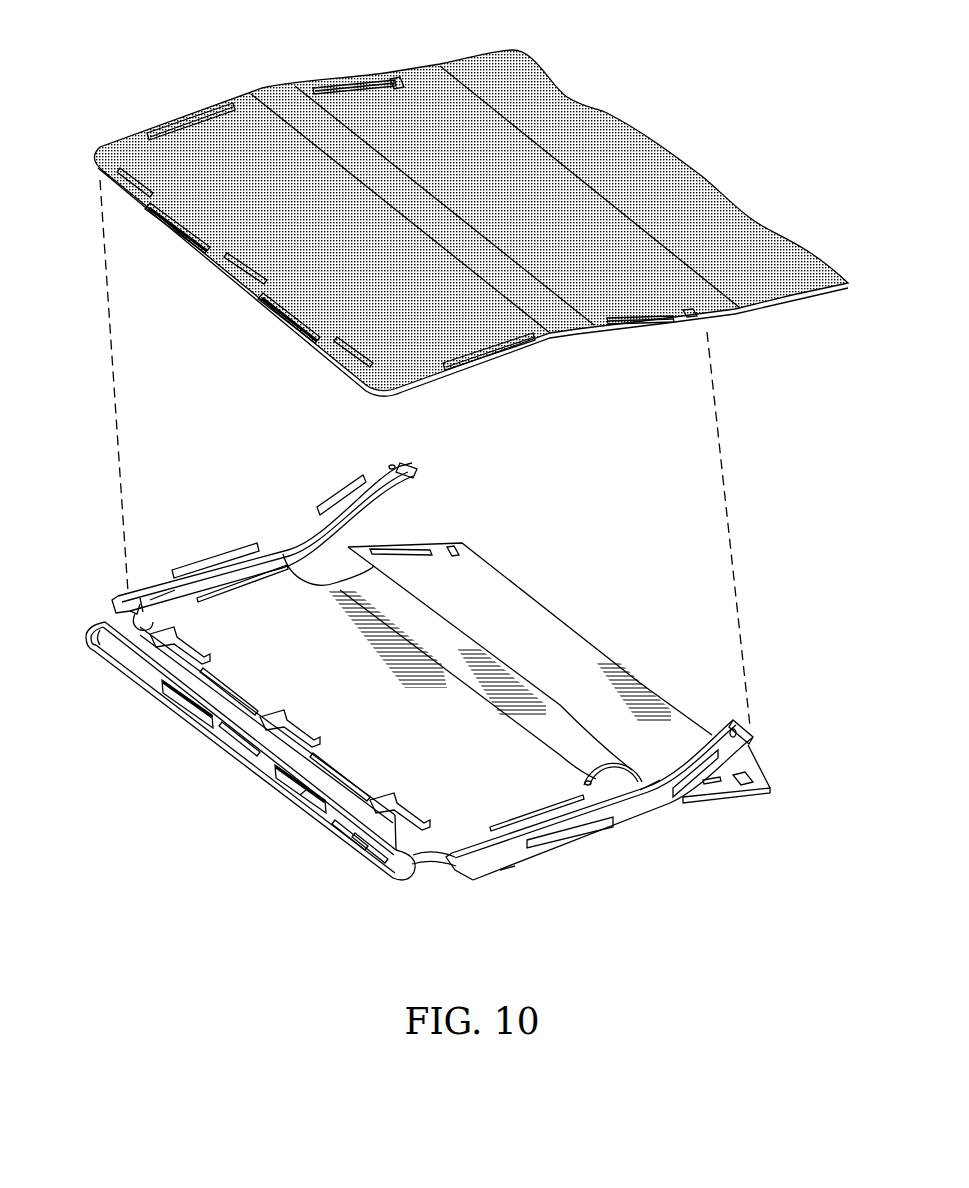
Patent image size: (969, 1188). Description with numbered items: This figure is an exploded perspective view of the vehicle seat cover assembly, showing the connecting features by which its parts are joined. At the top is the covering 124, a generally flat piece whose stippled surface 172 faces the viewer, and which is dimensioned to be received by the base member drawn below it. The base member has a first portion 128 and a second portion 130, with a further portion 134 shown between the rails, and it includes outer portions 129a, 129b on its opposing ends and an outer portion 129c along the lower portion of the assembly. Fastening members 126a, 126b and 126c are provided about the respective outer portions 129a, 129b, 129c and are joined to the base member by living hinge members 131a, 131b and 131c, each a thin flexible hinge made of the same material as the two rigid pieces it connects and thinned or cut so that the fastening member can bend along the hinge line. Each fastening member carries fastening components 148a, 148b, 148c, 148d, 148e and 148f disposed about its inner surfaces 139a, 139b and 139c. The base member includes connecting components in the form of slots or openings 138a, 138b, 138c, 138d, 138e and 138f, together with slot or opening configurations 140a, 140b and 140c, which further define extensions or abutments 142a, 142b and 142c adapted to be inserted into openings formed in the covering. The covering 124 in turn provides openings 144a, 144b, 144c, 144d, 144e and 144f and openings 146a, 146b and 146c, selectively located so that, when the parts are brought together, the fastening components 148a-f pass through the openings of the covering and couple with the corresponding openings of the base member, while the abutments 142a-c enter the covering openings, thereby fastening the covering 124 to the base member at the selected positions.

The covering 124 is at (500, 157).
The display surface region 172 is at (103, 157).
The opening of the covering 144a is at (187, 117).
The opening of the covering 144b is at (340, 83).
The opening of the covering 144c is at (653, 323).
The opening of the covering 144d is at (500, 350).
The opening of the covering 144e is at (177, 225).
The opening of the covering 144f is at (277, 310).
The opening of the covering 146a is at (123, 183).
The opening of the covering 146b is at (224, 272).
The opening of the covering 146c is at (340, 357).
The fastening member 126a is at (410, 462).
The fastening member 126b is at (750, 735).
The fastening member 126c is at (353, 830).
The first portion 128 is at (437, 770).
The outer portion 129a is at (167, 607).
The outer portion 129b is at (507, 880).
The outer portion 129c is at (303, 793).
The second portion 130 is at (567, 653).
The living hinge member 131a is at (137, 600).
The living hinge member 131b is at (487, 880).
The living hinge member 131c is at (135, 625).
The bent support portion 134 is at (413, 643).
The connecting component 138a is at (270, 568).
The connecting component 138b is at (413, 547).
The connecting component 138c is at (720, 793).
The connecting component 138d is at (527, 843).
The connecting component 138e is at (217, 720).
The connecting component 138f is at (335, 818).
The inner surface 139a is at (160, 600).
The inner surface 139b is at (630, 810).
The inner surface 139c is at (107, 640).
The connecting component 140a is at (127, 662).
The connecting component 140b is at (270, 770).
The connecting component 140c is at (407, 857).
The extension or abutment 142a is at (158, 680).
The extension or abutment 142b is at (258, 735).
The extension or abutment 142c is at (377, 866).
The fastening component 148a is at (227, 553).
The fastening component 148b is at (338, 490).
The fastening component 148c is at (693, 797).
The fastening component 148d is at (597, 840).
The fastening component 148e is at (170, 697).
The fastening component 148f is at (297, 797).